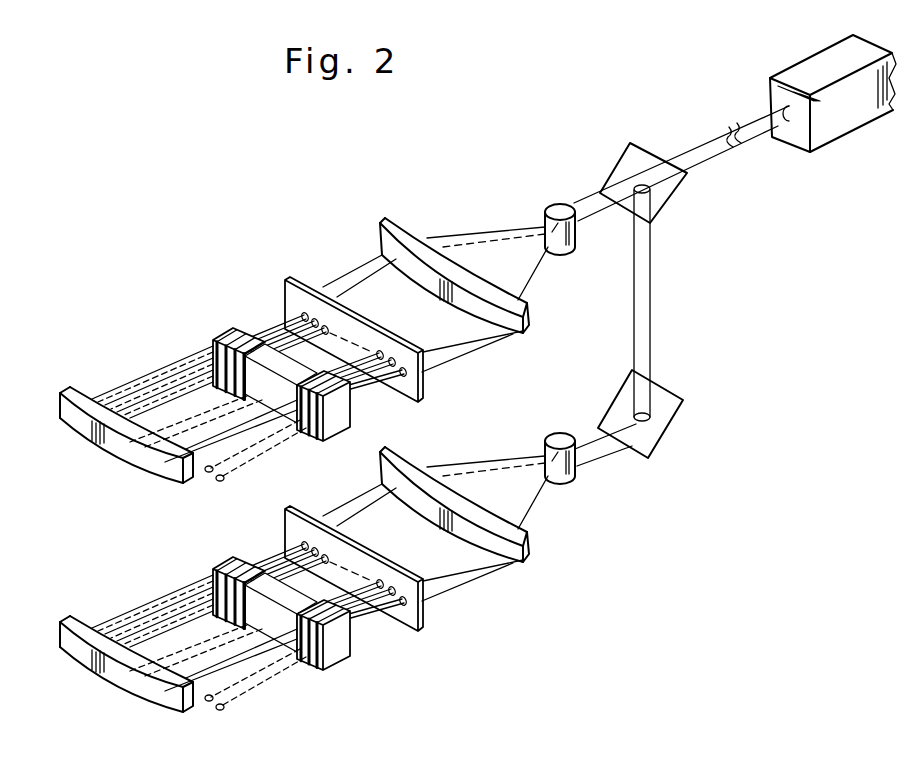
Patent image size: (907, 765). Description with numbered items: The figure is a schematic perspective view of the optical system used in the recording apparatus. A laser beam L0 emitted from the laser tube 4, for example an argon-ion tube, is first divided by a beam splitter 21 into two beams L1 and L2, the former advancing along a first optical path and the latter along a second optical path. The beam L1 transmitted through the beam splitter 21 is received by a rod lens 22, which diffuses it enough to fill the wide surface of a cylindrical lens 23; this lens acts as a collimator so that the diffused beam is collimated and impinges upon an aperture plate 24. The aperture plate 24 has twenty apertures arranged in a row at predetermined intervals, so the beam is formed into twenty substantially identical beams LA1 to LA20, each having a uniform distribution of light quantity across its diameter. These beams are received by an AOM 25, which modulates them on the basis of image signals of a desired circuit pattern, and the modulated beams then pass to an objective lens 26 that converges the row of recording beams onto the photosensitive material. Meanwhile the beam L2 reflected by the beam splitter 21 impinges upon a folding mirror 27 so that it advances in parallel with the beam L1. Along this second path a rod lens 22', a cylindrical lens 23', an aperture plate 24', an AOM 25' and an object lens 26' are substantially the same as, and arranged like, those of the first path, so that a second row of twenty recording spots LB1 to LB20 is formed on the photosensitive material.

The laser tube 4 is at (833, 115).
The laser beam L0 is at (727, 119).
The beam splitter 21 is at (669, 188).
The laser beam L1 is at (601, 181).
The laser beam L2 is at (672, 303).
The rod lens 22 is at (583, 261).
The cylindrical lens 23 is at (496, 288).
The aperture plate 24 is at (394, 349).
The beam LA1 is at (305, 302).
The beam LA20 is at (378, 399).
The AOM 25 is at (266, 358).
The objective lens 26 is at (126, 398).
The folding mirror 27 is at (668, 414).
The rod lens 22' is at (589, 484).
The cylindrical lens 23' is at (485, 538).
The aperture plate 24' is at (397, 578).
The recording spot LB1 is at (275, 549).
The recording spot LB20 is at (377, 625).
The AOM 25' is at (323, 630).
The object lens 26' is at (165, 683).